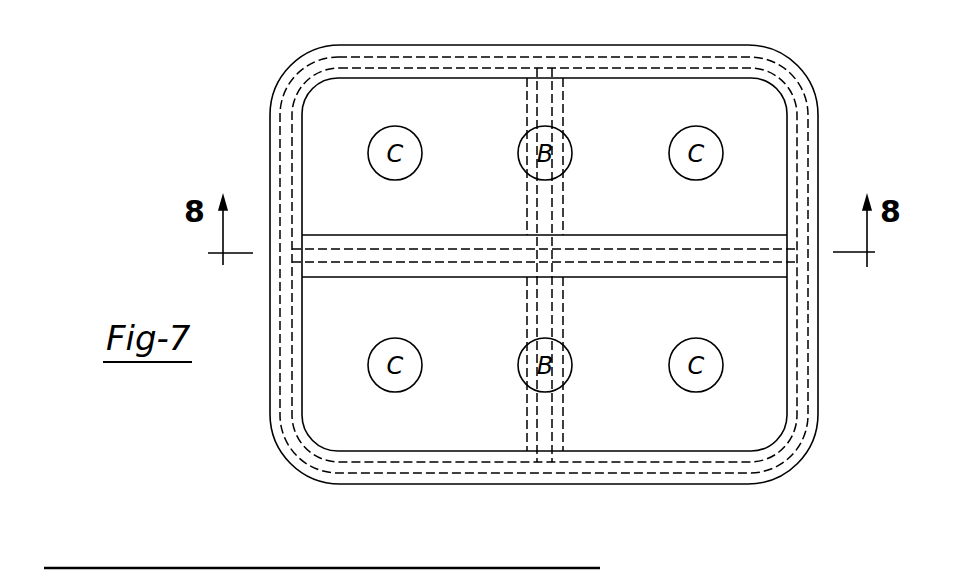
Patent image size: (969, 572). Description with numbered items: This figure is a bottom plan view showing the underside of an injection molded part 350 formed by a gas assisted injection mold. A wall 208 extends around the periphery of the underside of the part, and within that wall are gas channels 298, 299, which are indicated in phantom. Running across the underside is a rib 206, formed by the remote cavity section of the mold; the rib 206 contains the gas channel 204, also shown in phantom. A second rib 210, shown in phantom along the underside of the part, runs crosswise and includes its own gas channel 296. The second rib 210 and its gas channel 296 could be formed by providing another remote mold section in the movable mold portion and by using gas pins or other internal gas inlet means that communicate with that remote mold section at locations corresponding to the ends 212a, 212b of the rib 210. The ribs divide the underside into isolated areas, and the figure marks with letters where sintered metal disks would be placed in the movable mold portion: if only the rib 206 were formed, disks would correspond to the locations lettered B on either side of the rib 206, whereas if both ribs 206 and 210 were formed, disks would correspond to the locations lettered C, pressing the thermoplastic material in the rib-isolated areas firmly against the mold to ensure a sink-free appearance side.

The gas channel 204 is at (430, 255).
The rib 206 is at (602, 235).
The wall 208 is at (270, 142).
The second rib 210 is at (563, 105).
The end of the rib 212a is at (553, 38).
The end of the rib 212b is at (553, 492).
The gas channel 296 is at (543, 413).
The gas channel 298 is at (471, 57).
The gas channel 299 is at (717, 463).
The injection molded part 350 is at (843, 108).